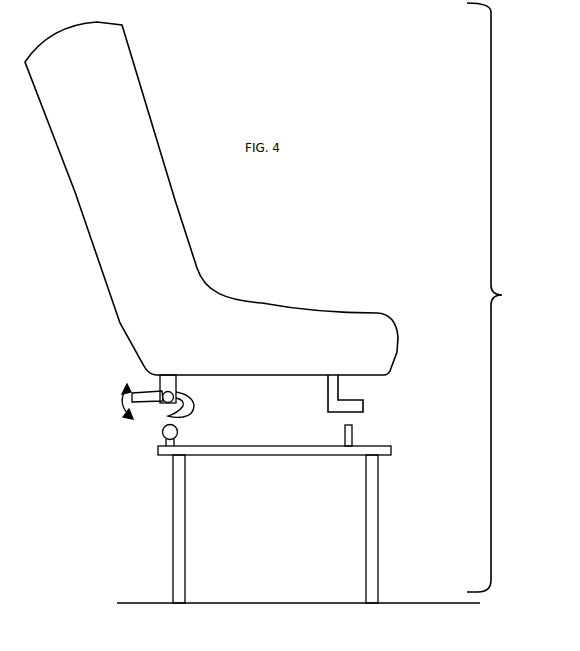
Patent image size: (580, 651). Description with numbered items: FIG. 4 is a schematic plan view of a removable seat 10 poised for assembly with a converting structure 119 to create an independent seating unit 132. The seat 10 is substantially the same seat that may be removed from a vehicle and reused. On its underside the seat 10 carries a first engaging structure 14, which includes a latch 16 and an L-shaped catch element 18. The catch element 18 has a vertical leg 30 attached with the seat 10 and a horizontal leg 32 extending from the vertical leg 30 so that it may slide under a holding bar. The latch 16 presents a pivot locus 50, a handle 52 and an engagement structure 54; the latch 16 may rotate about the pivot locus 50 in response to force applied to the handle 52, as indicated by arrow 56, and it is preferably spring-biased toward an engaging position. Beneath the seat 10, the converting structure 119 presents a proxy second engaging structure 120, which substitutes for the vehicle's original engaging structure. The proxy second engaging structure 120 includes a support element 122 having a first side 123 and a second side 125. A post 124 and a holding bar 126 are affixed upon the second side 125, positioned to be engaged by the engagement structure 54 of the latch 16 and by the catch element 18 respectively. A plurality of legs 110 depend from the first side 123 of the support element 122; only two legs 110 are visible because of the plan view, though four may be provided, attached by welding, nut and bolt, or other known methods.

The seat 10 is at (312, 267).
The first engaging structure 14 is at (104, 373).
The latch 16 is at (188, 396).
The catch element 18 is at (355, 397).
The vertical leg 30 is at (328, 400).
The horizontal leg 32 is at (337, 412).
The pivot locus 50 is at (170, 392).
The handle 52 is at (143, 395).
The engagement structure 54 is at (192, 410).
The arrow 56 is at (119, 402).
The legs 110 is at (186, 535).
The converting structure 119 is at (148, 527).
The proxy second engaging structure 120 is at (401, 437).
The support element 122 is at (254, 457).
The first side 123 is at (287, 456).
The post 124 is at (162, 436).
The second side 125 is at (284, 445).
The holding bar 126 is at (353, 437).
The independent seating unit 132 is at (508, 297).